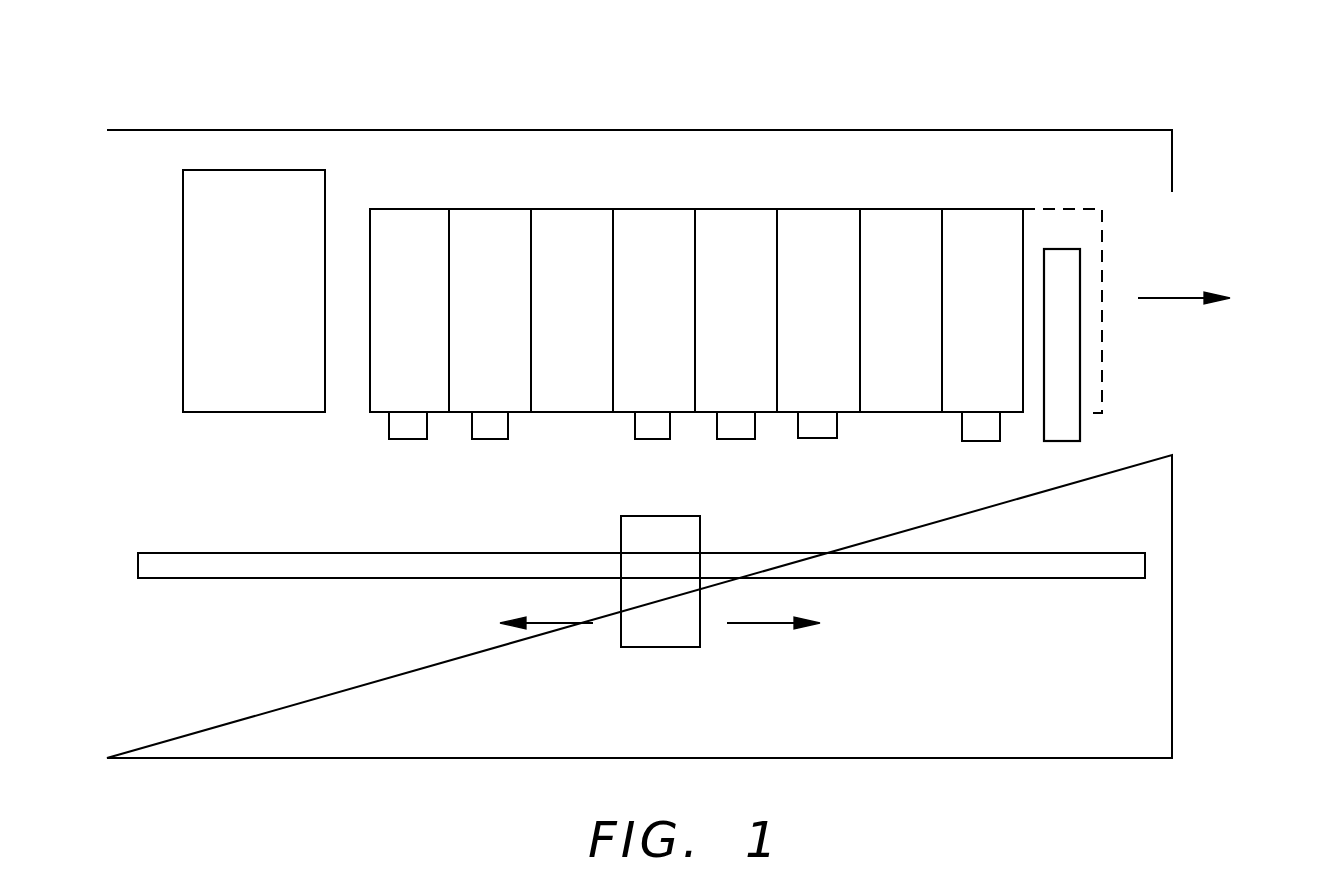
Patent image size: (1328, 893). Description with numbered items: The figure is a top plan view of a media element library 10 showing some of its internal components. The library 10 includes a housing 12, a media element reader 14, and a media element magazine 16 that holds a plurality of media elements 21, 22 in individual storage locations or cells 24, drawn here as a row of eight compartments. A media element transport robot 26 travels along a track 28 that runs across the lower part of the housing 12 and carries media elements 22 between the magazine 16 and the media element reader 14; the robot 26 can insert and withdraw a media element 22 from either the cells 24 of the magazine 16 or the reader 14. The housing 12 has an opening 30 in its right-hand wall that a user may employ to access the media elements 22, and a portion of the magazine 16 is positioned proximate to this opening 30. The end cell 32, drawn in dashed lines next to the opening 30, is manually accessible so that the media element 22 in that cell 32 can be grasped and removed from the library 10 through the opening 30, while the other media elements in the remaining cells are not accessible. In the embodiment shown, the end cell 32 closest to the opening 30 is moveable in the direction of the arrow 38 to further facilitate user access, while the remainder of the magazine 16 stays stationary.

The media element library 10 is at (678, 64).
The housing 12 is at (472, 129).
The media element reader 14 is at (260, 297).
The media element magazine 16 is at (672, 208).
The media element 21 is at (408, 428).
The media element 22 is at (1062, 443).
The cell 24 is at (815, 235).
The media element transport robot 26 is at (672, 590).
The track 28 is at (362, 579).
The opening 30 is at (1158, 385).
The end cell 32 is at (1048, 217).
The arrow 38 is at (1163, 297).